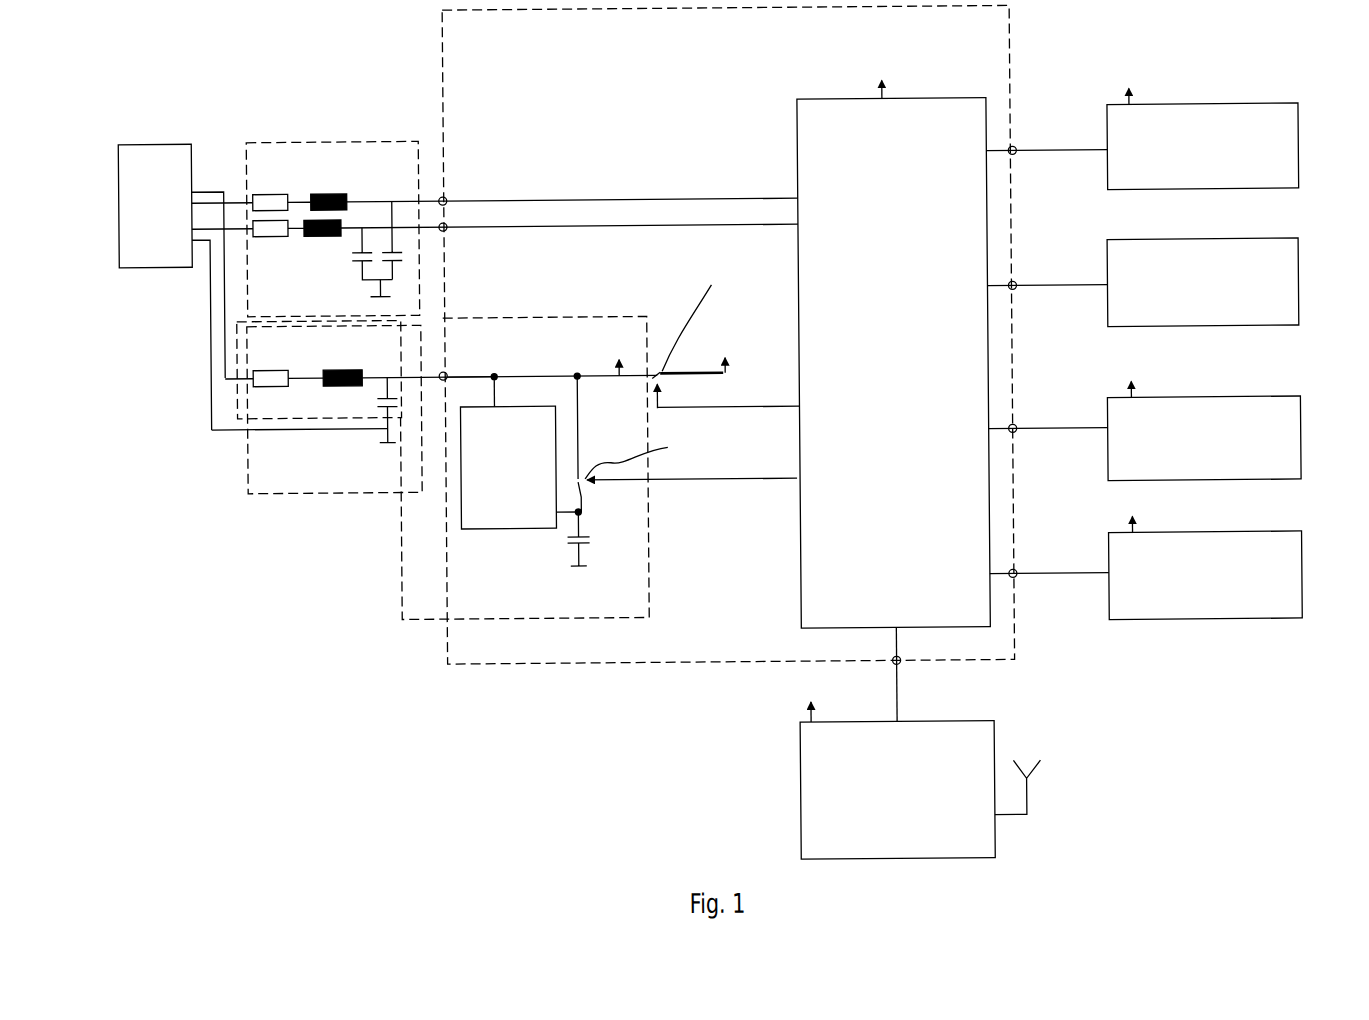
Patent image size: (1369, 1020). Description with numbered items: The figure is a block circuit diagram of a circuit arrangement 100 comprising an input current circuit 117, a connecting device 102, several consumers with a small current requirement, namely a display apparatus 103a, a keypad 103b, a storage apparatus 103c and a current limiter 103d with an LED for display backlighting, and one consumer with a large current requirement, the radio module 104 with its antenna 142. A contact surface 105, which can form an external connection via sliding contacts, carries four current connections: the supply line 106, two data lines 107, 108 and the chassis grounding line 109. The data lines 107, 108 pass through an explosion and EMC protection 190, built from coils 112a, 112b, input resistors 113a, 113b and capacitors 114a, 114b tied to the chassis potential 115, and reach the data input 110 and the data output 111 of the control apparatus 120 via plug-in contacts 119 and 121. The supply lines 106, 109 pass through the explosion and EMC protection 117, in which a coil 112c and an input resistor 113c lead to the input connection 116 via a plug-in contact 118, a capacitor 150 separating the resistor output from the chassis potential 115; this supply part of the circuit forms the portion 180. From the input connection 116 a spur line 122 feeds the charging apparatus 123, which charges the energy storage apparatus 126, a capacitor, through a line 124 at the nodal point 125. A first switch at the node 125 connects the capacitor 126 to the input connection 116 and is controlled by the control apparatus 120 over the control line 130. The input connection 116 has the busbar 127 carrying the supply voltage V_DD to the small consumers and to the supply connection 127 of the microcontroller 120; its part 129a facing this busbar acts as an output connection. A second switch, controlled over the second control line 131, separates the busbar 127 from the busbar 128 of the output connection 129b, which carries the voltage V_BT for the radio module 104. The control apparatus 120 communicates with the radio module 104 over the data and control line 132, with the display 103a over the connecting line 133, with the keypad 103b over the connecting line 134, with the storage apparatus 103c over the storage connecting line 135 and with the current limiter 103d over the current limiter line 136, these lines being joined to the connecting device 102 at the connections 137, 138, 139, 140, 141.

The circuit arrangement 100 is at (362, 705).
The connecting device 102 is at (483, 663).
The display apparatus 103a is at (1270, 108).
The keypad 103b is at (1270, 243).
The storage apparatus 103c is at (1270, 401).
The current limiter 103d is at (1270, 536).
The radio module 104 is at (797, 812).
The contact surface 105 is at (142, 140).
The supply line 106 is at (207, 188).
The data line 107 is at (233, 197).
The data line 108 is at (235, 235).
The chassis grounding line 109 is at (210, 428).
The data input 110 is at (799, 223).
The data output 111 is at (799, 198).
The coil 112a is at (272, 191).
The coil 112b is at (272, 217).
The coil 112c is at (268, 383).
The input resistor 113a is at (330, 191).
The input resistor 113b is at (330, 217).
The input resistor 113c is at (340, 383).
The capacitor 114a is at (403, 254).
The capacitor 114b is at (352, 256).
The chassis potential 115 is at (375, 298).
The input connection 116 is at (565, 370).
The explosion and EMC protection 117 is at (265, 492).
The plug-in contact 118 is at (455, 375).
The plug-in contact 119 is at (446, 196).
The control apparatus 120 is at (799, 106).
The plug-in contact 121 is at (448, 224).
The spur line 122 is at (497, 383).
The charging apparatus 123 is at (483, 528).
The line 124 is at (563, 516).
The nodal point 125 is at (582, 511).
The energy storage apparatus 126 is at (590, 523).
The busbar 127 is at (622, 367).
The busbar 128 is at (728, 365).
The output connection 129a is at (580, 373).
The output connection 129b is at (724, 378).
The control line 130 is at (767, 481).
The second control line 131 is at (720, 408).
The data and control line 132 is at (897, 700).
The connecting line 133 is at (1078, 153).
The connecting line 134 is at (1058, 288).
The storage connecting line 135 is at (1078, 431).
The current limiter line 136 is at (1060, 578).
The connection 137 is at (898, 663).
The connection 138 is at (1015, 150).
The connection 139 is at (1015, 292).
The connection 140 is at (1014, 435).
The node 141 is at (1013, 580).
The antenna 142 is at (1028, 798).
The capacitor 150 is at (380, 404).
The circuit portion 180 is at (236, 400).
The explosion and EMC protection 190 is at (415, 139).